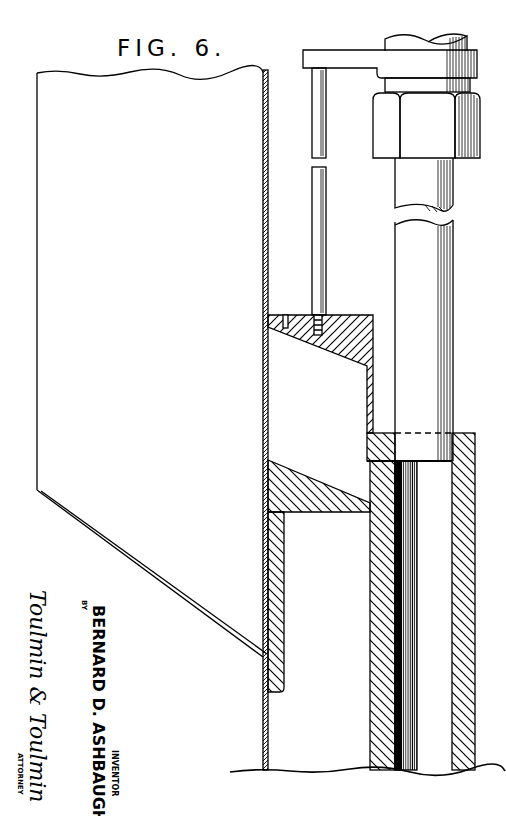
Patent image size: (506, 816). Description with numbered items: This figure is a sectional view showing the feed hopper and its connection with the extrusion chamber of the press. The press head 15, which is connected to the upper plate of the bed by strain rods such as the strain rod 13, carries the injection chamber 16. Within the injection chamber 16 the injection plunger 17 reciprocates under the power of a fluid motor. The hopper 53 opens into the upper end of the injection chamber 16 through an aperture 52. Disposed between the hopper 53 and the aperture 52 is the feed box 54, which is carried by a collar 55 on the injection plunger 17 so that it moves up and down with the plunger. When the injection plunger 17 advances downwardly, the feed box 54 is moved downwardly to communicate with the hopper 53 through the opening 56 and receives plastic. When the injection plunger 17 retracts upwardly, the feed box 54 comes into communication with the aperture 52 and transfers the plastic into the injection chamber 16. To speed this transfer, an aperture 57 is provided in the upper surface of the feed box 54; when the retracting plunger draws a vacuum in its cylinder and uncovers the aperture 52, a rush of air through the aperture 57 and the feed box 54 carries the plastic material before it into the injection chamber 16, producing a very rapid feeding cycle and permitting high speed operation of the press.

The strain rod 13 is at (505, 212).
The press head 15 is at (505, 134).
The injection chamber 16 is at (476, 440).
The injection plunger 17 is at (406, 285).
The aperture 52 is at (383, 476).
The hopper 53 is at (217, 627).
The feed box 54 is at (287, 498).
The collar 55 is at (381, 110).
The opening 56 is at (265, 568).
The aperture 57 is at (284, 315).